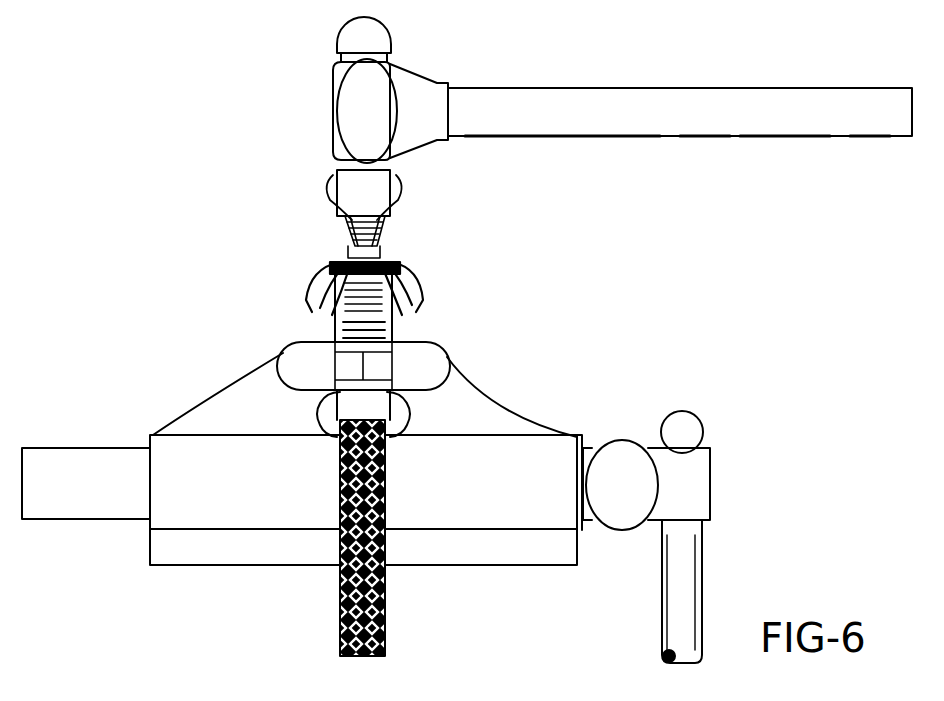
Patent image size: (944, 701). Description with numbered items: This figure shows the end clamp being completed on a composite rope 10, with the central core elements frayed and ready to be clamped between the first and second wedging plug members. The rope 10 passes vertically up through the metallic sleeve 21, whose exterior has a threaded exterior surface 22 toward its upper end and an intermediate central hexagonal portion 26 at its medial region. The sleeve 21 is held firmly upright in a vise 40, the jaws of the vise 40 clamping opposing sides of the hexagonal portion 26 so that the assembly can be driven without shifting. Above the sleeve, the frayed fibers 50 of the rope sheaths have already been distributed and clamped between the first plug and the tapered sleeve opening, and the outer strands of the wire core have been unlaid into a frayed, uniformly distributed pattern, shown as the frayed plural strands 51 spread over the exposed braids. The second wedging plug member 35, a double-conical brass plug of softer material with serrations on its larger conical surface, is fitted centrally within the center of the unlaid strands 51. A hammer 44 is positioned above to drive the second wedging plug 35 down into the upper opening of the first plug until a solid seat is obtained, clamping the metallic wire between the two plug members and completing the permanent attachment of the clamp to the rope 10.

The composite rope 10 is at (389, 627).
The metallic sleeve 21 is at (325, 312).
The threaded exterior surface 22 is at (393, 330).
The intermediate central hexagonal portion 26 is at (350, 366).
The second wedging plug member 35 is at (350, 234).
The vise 40 is at (538, 408).
The hammer 44 is at (720, 138).
The frayed fibers 50 is at (413, 270).
The frayed plural strands of the wire core 51 is at (398, 177).